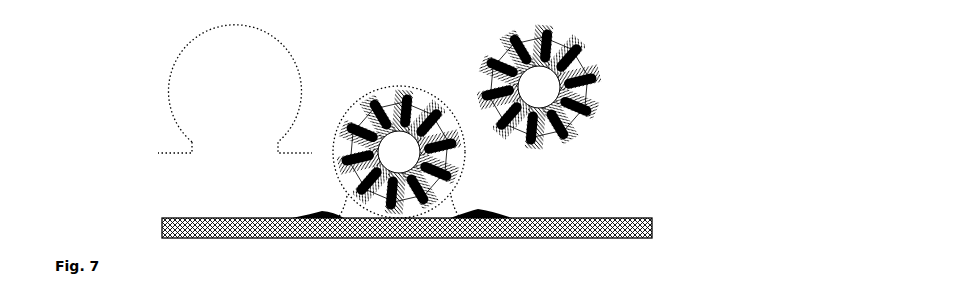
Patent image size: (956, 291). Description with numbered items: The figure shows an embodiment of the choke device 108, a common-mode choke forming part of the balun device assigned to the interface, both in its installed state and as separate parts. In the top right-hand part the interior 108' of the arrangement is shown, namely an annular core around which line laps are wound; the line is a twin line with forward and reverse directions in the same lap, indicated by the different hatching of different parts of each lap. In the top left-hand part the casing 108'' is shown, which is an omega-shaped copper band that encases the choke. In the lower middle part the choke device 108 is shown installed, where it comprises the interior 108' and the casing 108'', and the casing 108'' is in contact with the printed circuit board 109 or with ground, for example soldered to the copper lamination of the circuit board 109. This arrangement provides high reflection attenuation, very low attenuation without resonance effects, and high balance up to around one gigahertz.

The choke device 108 is at (399, 122).
The interior of the arrangement of the choke device 108' is at (391, 103).
The casing 108'' is at (463, 82).
The printed circuit board 109 is at (596, 218).